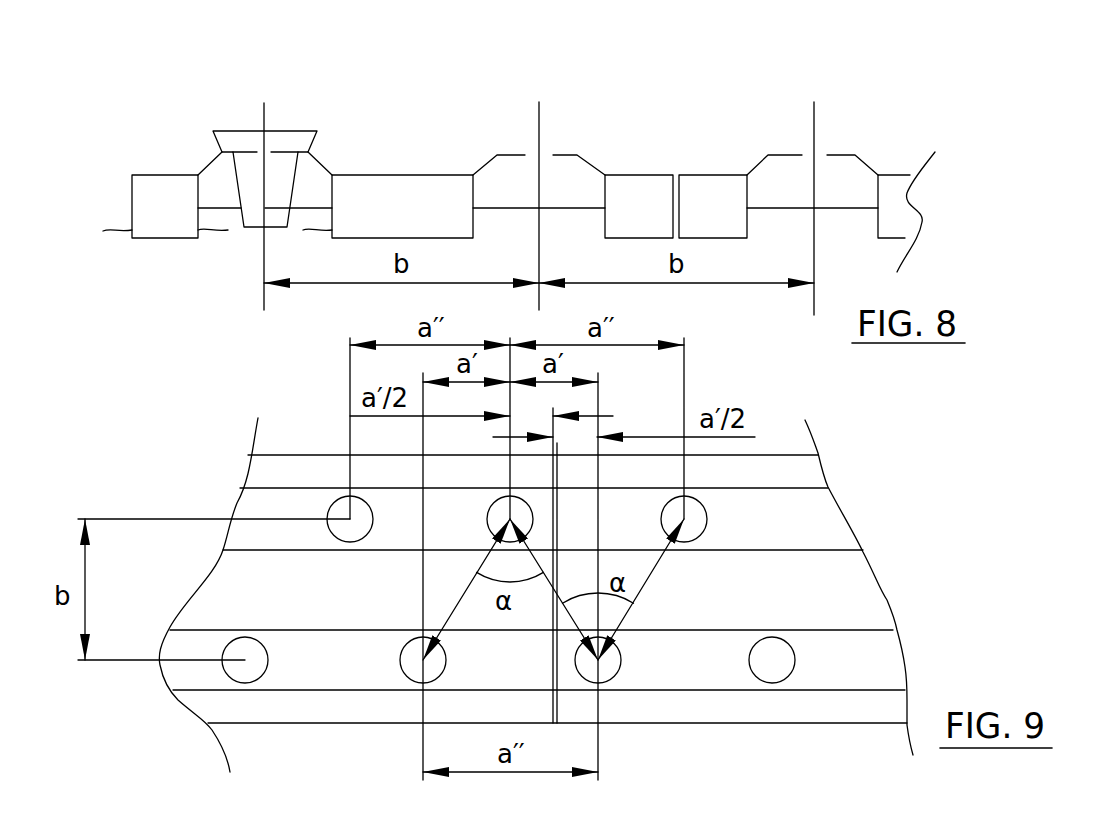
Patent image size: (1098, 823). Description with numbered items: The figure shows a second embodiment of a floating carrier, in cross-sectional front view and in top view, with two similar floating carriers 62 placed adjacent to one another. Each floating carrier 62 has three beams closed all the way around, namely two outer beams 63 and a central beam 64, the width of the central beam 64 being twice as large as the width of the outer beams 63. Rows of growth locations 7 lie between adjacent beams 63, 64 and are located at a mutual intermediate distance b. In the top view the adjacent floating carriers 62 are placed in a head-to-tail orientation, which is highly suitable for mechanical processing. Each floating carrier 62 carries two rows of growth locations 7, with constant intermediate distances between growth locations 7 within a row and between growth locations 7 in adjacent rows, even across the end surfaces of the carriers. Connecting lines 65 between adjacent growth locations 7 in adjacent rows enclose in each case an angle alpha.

In FIG. 8, the growth location 7 is at (320, 143).
In FIG. 9, the growth location 7 is at (325, 528).
In FIG. 8, the floating carrier 62 is at (637, 155).
In FIG. 8, the outer beam 63 is at (139, 230).
In FIG. 8, the central beam 64 is at (376, 175).
In FIG. 9, the connecting line 65 is at (540, 560).